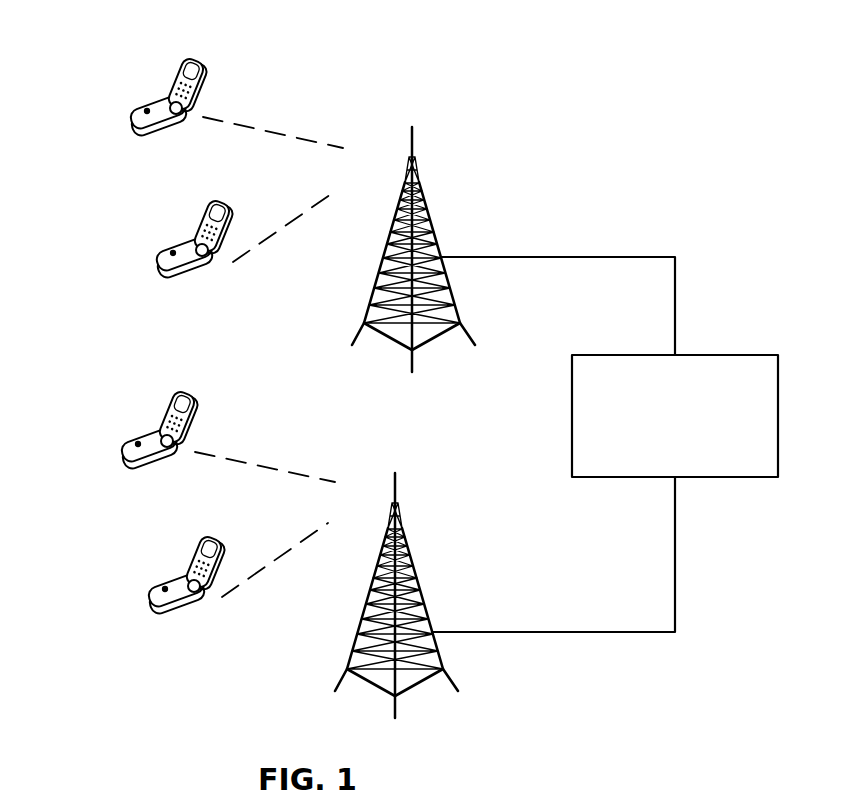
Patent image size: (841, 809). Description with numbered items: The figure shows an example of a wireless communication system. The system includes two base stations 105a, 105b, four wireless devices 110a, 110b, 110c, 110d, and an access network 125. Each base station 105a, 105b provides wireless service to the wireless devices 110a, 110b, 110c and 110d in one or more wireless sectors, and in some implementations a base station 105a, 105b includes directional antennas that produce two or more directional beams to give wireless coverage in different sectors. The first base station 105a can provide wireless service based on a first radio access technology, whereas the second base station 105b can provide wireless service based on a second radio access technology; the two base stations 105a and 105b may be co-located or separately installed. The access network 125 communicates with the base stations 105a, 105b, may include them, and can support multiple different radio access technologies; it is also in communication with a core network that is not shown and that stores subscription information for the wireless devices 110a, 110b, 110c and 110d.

The wireless device 110a is at (147, 69).
The wireless device 110b is at (176, 214).
The wireless device 110c is at (138, 403).
The wireless device 110d is at (168, 547).
The first base station 105a is at (427, 208).
The second base station 105b is at (410, 554).
The access network 125 is at (588, 355).